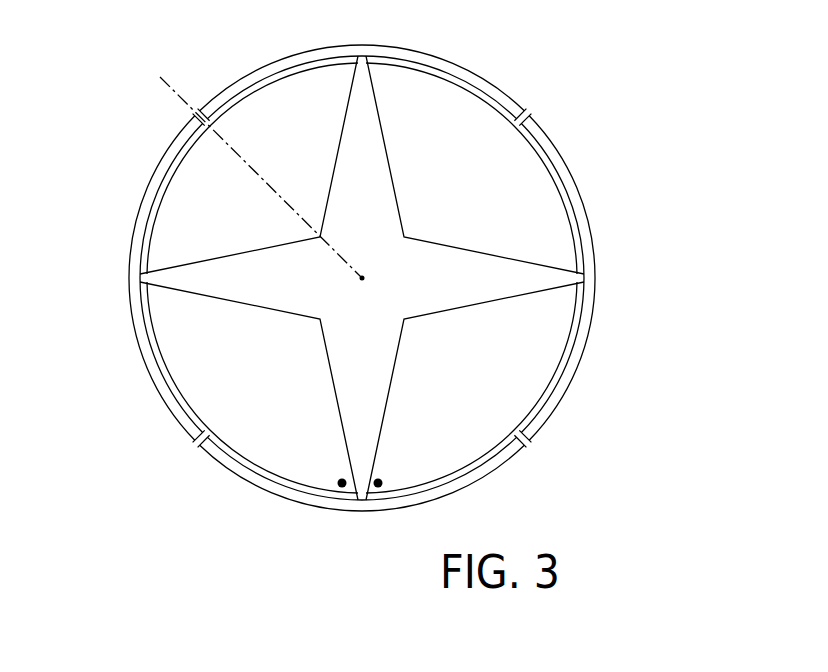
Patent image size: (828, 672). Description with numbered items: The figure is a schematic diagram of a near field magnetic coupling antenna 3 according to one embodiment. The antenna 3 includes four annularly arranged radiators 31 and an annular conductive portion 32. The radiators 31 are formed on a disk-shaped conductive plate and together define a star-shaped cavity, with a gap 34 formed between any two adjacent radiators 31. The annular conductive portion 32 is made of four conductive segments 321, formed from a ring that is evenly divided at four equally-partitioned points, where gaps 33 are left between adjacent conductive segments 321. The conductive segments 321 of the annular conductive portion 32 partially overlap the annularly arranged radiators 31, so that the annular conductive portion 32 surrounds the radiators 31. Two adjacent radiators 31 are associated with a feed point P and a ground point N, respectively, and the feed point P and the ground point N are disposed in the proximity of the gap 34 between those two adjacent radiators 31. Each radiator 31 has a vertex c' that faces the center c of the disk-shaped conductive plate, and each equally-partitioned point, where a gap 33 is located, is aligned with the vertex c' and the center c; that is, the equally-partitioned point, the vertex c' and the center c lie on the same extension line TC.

The near field magnetic coupling antenna 3 is at (510, 38).
The radiator 31 is at (268, 156).
The annular conductive portion 32 is at (625, 418).
The conductive segment 321 is at (540, 419).
The gap 33 is at (199, 108).
The gap 34 is at (360, 68).
The extension line TC is at (184, 104).
The center c is at (370, 284).
The vertex c' is at (335, 229).
The feed point P is at (334, 470).
The ground point N is at (389, 470).